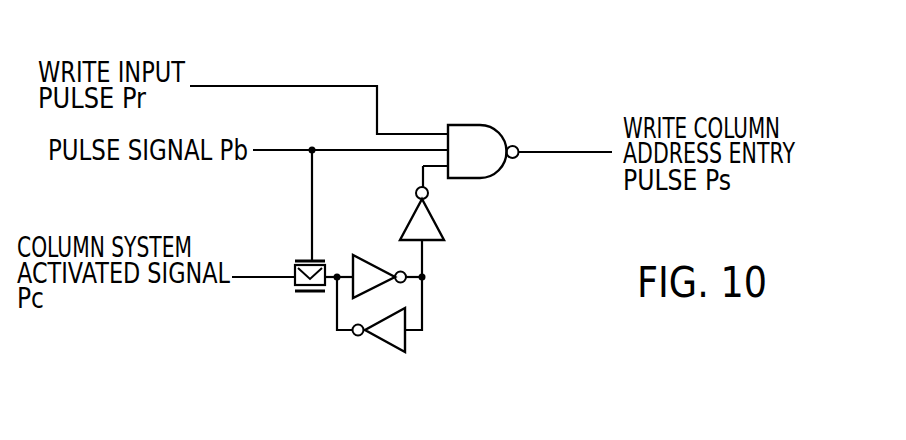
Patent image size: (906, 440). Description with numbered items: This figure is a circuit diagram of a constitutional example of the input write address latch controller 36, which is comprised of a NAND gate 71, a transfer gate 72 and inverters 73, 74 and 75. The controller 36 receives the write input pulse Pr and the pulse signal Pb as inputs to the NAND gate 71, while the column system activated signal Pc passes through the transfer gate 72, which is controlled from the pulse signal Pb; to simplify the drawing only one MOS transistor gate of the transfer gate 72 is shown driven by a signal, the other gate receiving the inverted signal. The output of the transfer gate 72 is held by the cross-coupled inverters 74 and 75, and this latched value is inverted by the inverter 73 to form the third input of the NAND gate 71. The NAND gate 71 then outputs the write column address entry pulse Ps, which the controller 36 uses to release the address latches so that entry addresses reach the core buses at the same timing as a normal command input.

The input write address latch controller 36 is at (346, 61).
The NAND gate 71 is at (470, 123).
The transfer gate 72 is at (308, 295).
The inverter 73 is at (433, 243).
The inverter 74 is at (372, 255).
The inverter 75 is at (372, 340).